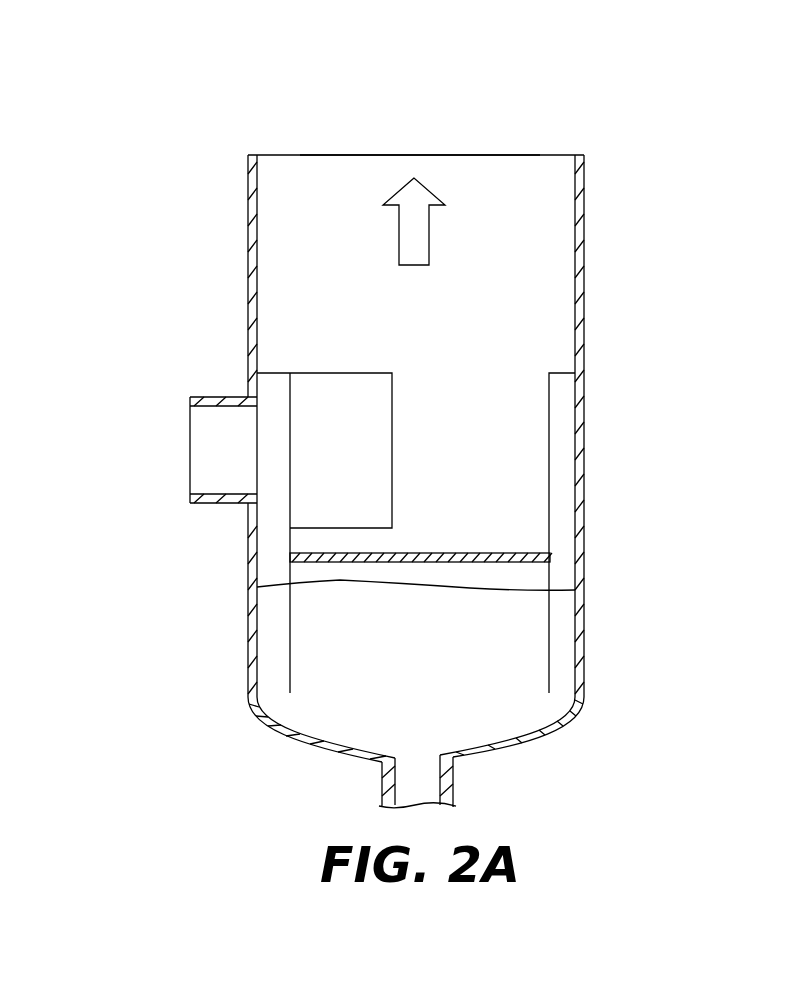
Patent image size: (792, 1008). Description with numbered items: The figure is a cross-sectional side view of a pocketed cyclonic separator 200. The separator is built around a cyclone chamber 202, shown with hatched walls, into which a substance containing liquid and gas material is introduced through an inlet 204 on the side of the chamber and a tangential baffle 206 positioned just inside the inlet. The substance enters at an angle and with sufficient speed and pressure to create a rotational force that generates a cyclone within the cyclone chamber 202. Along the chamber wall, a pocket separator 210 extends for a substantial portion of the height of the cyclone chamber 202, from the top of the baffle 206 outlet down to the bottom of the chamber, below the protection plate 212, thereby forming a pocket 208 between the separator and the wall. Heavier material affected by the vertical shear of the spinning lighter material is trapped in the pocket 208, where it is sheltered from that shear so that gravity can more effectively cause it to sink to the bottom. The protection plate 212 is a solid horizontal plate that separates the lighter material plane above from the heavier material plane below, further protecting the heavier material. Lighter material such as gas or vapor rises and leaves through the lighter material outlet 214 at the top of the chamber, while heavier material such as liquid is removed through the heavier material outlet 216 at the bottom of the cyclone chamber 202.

The pocketed cyclonic separator 200 is at (396, 428).
The cyclone chamber 202 is at (542, 310).
The inlet 204 is at (190, 450).
The tangential baffle 206 is at (340, 373).
The pockets 208 is at (530, 426).
The pocket separators 210 is at (550, 437).
The protection plate 212 is at (520, 553).
The lighter material outlet 214 is at (485, 170).
The heavier material outlet 216 is at (430, 775).